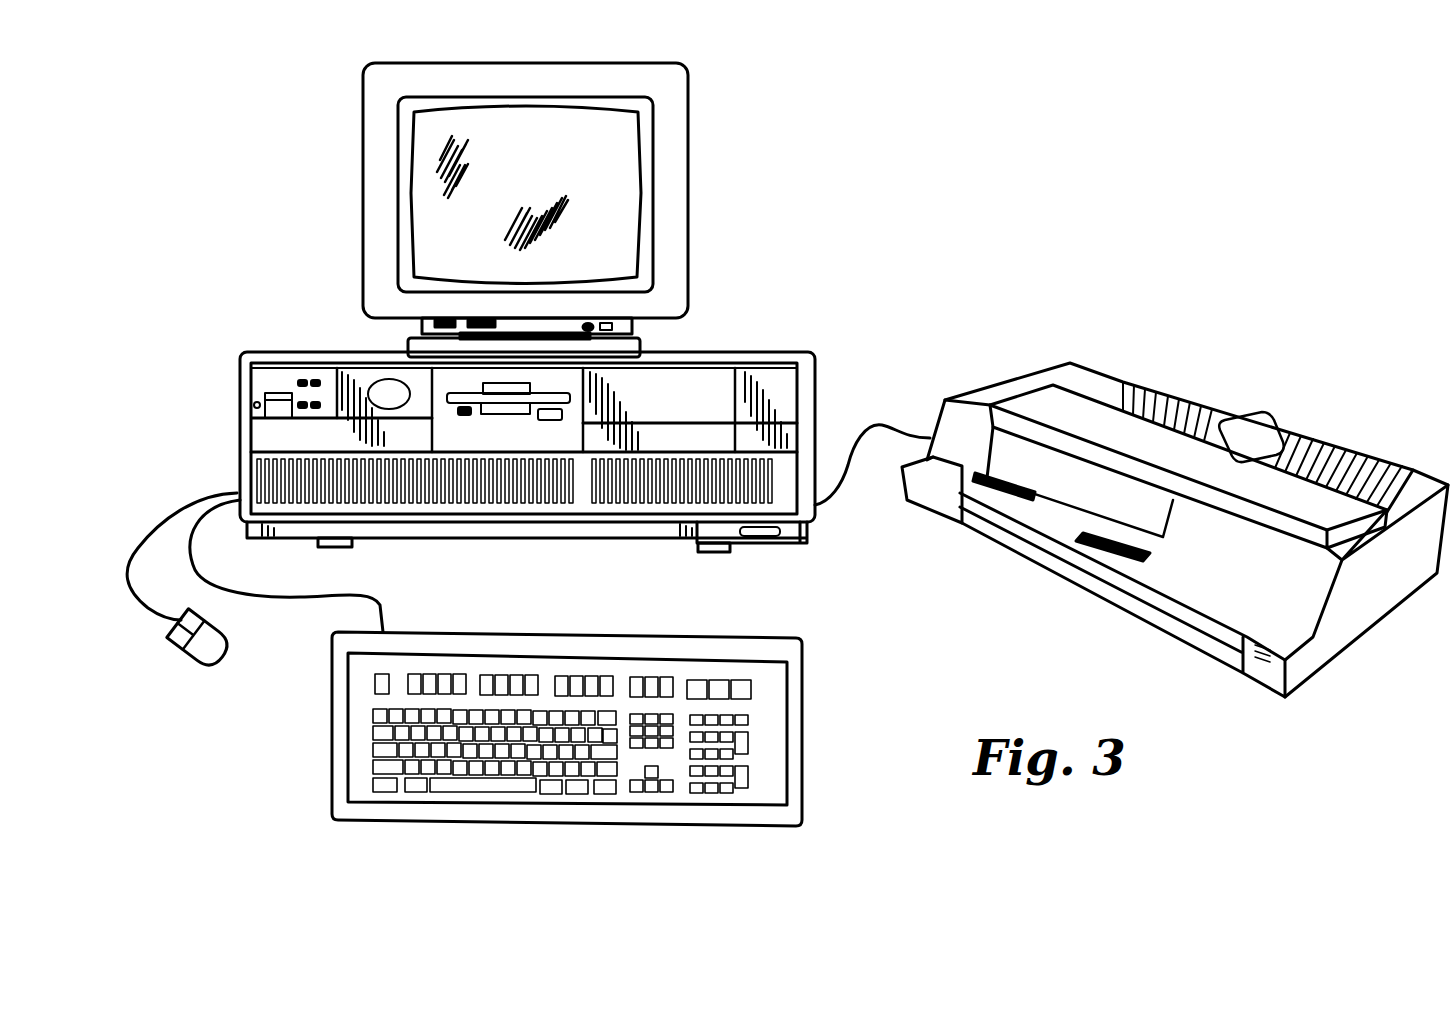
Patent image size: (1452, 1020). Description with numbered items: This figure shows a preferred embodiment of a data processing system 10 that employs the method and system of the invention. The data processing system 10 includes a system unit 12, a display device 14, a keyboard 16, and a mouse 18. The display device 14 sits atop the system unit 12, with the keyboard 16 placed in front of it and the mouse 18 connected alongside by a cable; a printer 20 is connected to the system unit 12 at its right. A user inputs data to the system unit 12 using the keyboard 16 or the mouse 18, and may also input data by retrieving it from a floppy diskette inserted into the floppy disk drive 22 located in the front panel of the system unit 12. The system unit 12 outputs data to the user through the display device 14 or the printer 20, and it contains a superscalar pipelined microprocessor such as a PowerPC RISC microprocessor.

The data processing system 10 is at (900, 190).
The system unit 12 is at (527, 435).
The display device 14 is at (697, 226).
The keyboard 16 is at (679, 626).
The mouse 18 is at (183, 645).
The printer 20 is at (1004, 365).
The floppy disk drive 22 is at (522, 418).